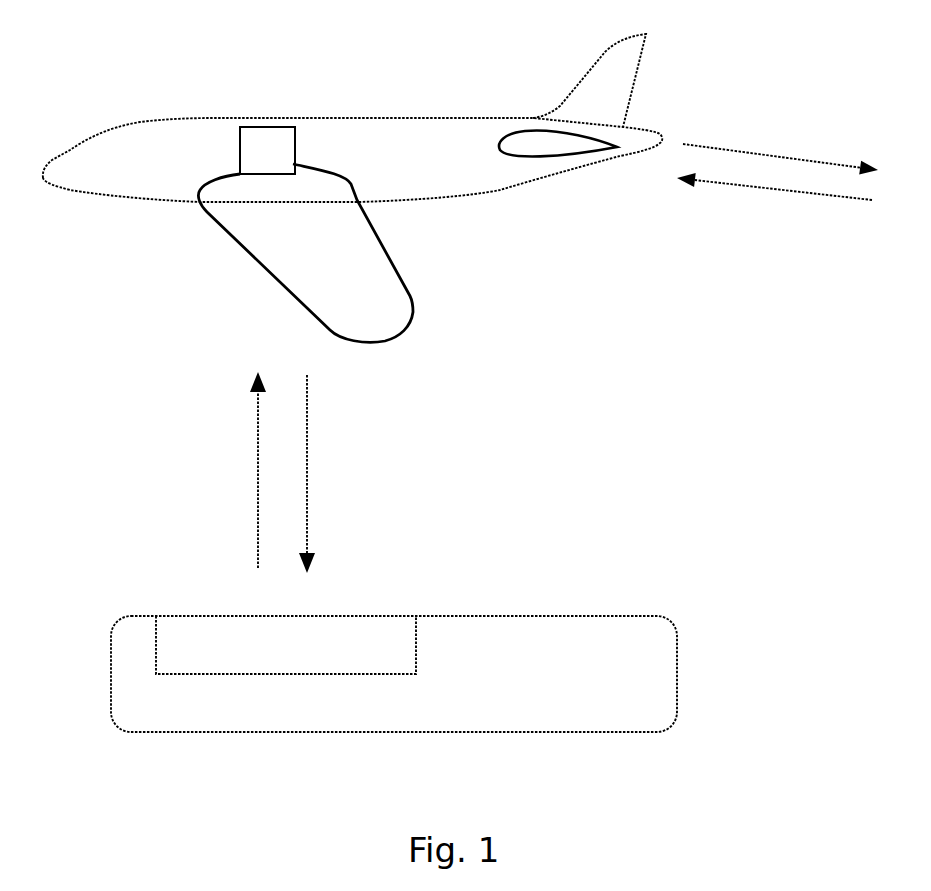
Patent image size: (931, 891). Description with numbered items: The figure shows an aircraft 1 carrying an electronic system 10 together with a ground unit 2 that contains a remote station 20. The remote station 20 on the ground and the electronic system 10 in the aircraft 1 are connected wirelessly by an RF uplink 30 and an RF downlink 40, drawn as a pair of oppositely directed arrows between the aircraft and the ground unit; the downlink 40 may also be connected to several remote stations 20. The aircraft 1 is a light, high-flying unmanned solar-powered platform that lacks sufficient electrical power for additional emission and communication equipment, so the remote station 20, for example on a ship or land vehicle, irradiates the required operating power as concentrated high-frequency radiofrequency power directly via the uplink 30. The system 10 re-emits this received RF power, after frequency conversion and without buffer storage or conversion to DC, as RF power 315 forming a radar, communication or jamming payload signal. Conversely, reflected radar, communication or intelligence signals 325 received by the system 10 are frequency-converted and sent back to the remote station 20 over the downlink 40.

The aircraft 1 is at (510, 90).
The electronic system 10 is at (267, 150).
The ground unit 2 is at (646, 659).
The remote station 20 is at (286, 645).
The RF uplink 30 is at (245, 511).
The RF downlink 40 is at (322, 474).
The RF power 315 is at (760, 140).
The intelligence signals 325 is at (769, 205).